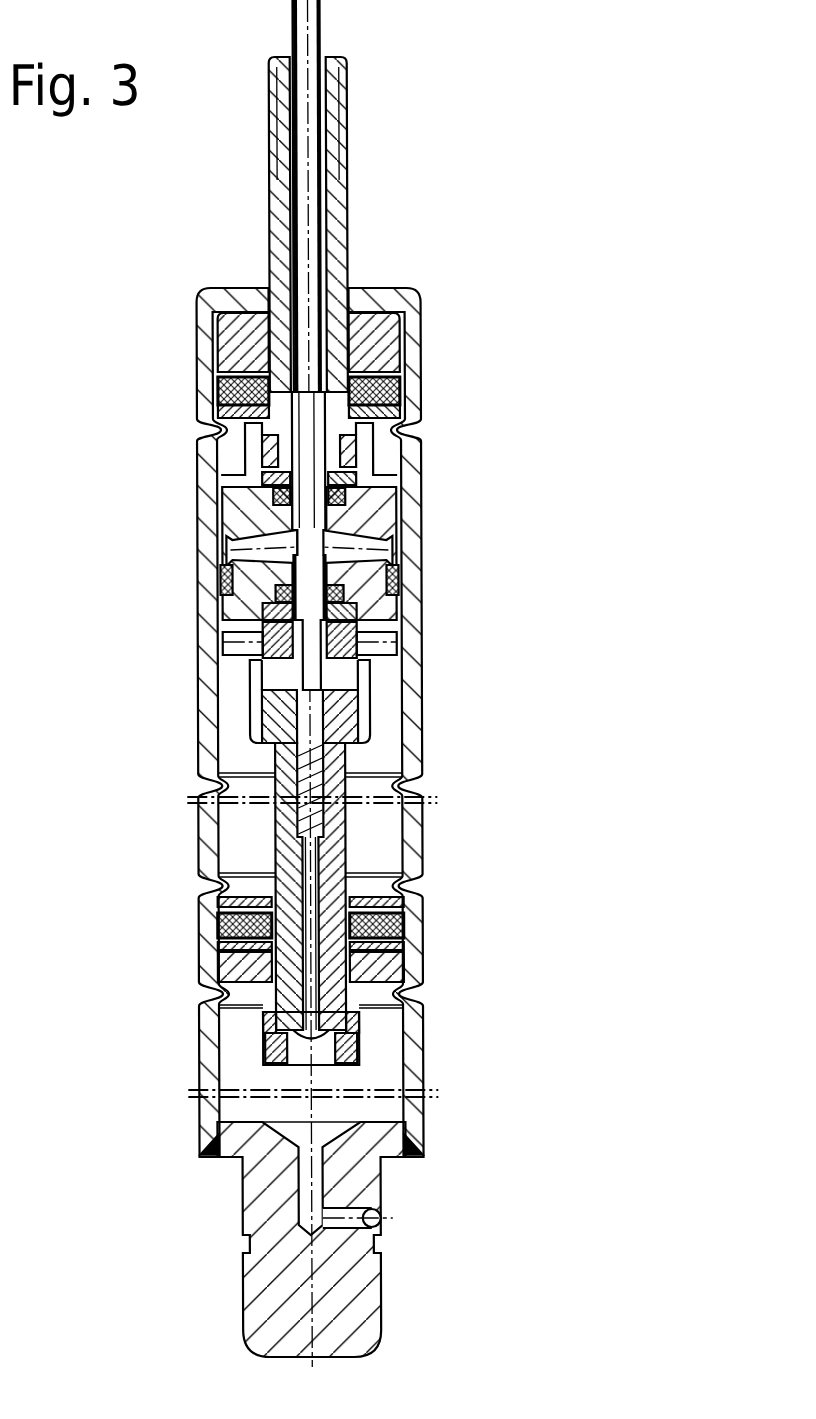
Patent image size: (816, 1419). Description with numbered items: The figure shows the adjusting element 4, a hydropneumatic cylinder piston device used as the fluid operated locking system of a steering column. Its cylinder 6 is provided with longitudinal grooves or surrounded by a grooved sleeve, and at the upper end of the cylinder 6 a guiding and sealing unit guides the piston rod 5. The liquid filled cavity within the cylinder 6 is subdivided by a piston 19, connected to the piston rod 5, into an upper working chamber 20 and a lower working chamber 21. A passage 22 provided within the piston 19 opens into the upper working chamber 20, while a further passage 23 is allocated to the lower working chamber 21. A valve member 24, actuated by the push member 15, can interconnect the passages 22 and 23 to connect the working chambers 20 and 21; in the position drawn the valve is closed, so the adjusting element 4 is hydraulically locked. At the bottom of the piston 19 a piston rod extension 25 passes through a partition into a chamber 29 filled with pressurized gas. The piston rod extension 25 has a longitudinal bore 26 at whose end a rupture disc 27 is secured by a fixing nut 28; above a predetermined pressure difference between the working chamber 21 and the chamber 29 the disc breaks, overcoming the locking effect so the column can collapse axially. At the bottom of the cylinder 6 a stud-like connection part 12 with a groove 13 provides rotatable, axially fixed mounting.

The adjusting element 4 is at (373, 722).
The piston rod 5 is at (334, 138).
The cylinder 6 is at (416, 692).
The stud-like connection part 12 is at (308, 1239).
The groove 13 is at (373, 1240).
The push member 15 is at (313, 50).
The piston 19 is at (222, 580).
The upper working chamber 20 is at (422, 420).
The lower working chamber 21 is at (228, 725).
The passage 22 is at (242, 537).
The further passage 23 is at (245, 640).
The valve member 24 is at (346, 598).
The piston rod extension 25 is at (338, 855).
The longitudinal bore 26 is at (313, 920).
The rupture disc 27 is at (337, 1055).
The fixing nut 28 is at (263, 1043).
The chamber 29 is at (372, 1105).